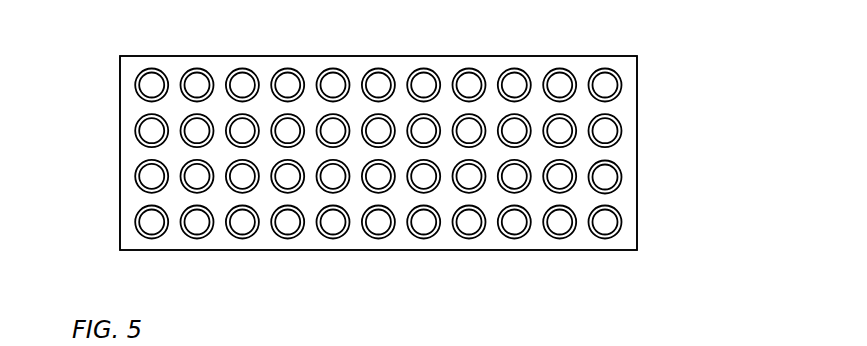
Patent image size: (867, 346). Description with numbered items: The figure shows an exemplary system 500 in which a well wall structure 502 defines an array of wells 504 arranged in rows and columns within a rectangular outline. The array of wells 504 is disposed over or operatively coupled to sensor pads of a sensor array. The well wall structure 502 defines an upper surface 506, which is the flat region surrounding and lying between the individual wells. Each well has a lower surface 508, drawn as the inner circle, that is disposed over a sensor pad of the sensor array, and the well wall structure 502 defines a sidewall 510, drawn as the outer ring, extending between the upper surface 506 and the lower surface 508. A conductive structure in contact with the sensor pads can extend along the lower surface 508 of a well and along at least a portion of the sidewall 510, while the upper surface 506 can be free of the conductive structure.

The system 500 is at (637, 106).
The well wall structure 502 is at (622, 150).
The array of wells 504 is at (622, 180).
The upper surface 506 is at (132, 103).
The lower surface 508 is at (285, 82).
The sidewall 510 is at (291, 70).